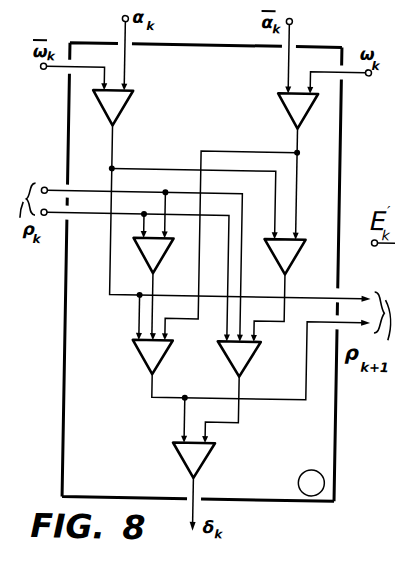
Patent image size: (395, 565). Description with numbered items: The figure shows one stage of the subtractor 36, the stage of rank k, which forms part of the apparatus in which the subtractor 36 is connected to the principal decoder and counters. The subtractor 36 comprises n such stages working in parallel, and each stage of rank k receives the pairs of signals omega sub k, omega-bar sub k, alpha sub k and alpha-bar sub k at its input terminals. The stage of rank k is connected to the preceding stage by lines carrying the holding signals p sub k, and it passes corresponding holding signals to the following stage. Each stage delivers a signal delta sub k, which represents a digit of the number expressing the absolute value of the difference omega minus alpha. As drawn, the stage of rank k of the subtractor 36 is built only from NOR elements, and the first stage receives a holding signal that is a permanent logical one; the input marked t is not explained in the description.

The subtractor 36 is at (339, 181).
The rank k is at (311, 483).
The timing input t is at (335, 72).